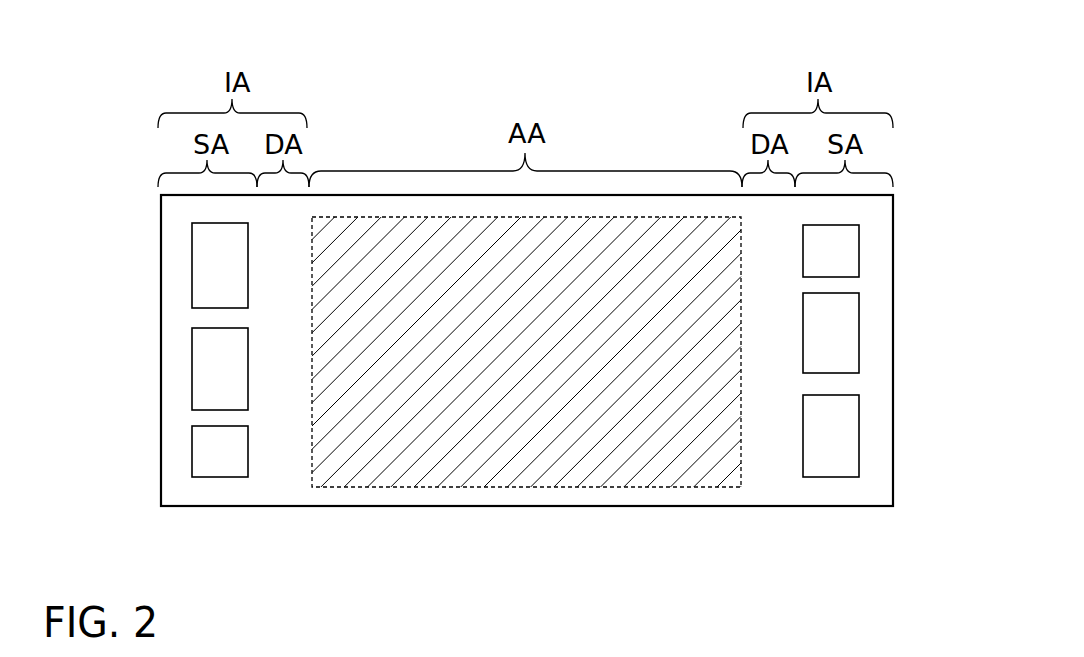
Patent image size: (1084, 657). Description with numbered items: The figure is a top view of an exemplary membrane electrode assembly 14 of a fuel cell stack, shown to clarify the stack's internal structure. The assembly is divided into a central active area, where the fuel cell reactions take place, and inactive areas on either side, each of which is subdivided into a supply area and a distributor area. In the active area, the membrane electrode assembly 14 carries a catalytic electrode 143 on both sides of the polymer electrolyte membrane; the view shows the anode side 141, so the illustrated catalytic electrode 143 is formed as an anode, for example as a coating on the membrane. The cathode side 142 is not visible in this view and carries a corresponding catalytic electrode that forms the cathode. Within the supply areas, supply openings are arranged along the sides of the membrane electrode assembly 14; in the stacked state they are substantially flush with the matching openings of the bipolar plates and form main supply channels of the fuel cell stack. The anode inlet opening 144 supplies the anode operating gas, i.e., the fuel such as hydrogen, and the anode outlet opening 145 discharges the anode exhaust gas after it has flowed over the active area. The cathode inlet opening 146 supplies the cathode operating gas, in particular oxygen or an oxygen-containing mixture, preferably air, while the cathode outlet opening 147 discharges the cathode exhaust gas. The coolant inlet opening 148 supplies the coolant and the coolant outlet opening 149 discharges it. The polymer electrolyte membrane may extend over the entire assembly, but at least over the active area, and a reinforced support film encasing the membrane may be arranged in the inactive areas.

The membrane electrode assembly 14 is at (628, 82).
The anode side 141 is at (304, 476).
The cathode side 142 is at (444, 510).
The catalytic electrode 143 is at (470, 408).
The anode inlet opening 144 is at (192, 445).
The anode outlet opening 145 is at (858, 258).
The cathode inlet opening 146 is at (192, 258).
The cathode outlet opening 147 is at (858, 444).
The coolant inlet opening 148 is at (192, 351).
The coolant outlet opening 149 is at (858, 350).